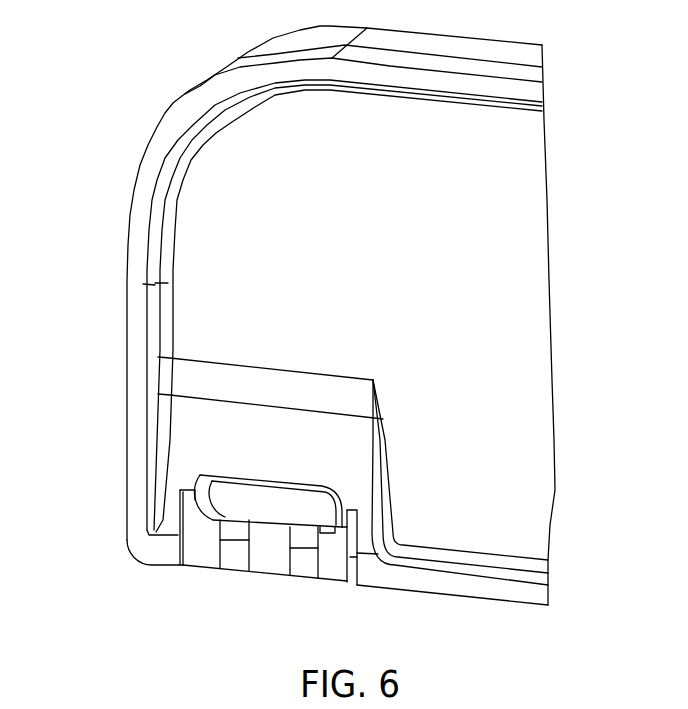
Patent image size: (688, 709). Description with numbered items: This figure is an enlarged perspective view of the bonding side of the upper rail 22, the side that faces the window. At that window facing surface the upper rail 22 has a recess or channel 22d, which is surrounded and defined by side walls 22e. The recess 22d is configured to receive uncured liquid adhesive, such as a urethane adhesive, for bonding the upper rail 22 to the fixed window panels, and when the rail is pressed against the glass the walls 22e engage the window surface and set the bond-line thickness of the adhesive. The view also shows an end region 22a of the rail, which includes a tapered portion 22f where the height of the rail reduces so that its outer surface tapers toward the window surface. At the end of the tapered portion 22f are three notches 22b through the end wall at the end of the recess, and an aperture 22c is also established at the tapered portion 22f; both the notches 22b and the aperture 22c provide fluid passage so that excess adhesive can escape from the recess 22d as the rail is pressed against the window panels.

The upper rail 22 is at (166, 83).
The end region 22a is at (137, 569).
The notches 22b is at (345, 572).
The aperture 22c is at (240, 494).
The recess 22d is at (197, 219).
The side walls 22e is at (182, 157).
The tapered portion 22f is at (197, 435).